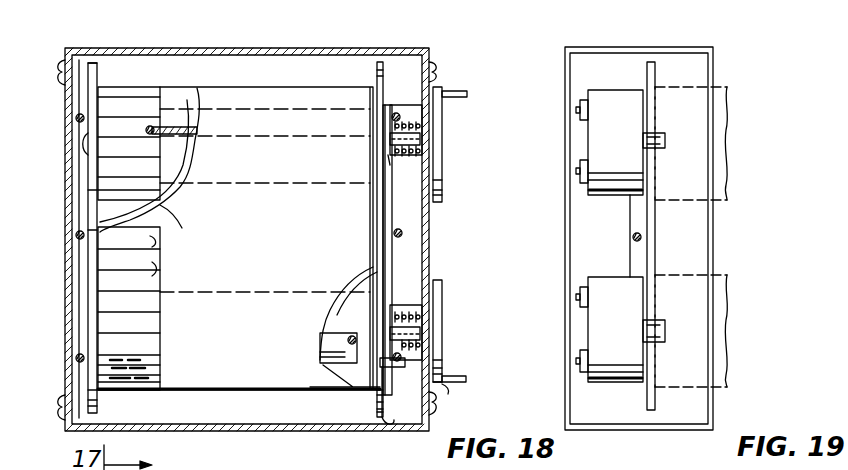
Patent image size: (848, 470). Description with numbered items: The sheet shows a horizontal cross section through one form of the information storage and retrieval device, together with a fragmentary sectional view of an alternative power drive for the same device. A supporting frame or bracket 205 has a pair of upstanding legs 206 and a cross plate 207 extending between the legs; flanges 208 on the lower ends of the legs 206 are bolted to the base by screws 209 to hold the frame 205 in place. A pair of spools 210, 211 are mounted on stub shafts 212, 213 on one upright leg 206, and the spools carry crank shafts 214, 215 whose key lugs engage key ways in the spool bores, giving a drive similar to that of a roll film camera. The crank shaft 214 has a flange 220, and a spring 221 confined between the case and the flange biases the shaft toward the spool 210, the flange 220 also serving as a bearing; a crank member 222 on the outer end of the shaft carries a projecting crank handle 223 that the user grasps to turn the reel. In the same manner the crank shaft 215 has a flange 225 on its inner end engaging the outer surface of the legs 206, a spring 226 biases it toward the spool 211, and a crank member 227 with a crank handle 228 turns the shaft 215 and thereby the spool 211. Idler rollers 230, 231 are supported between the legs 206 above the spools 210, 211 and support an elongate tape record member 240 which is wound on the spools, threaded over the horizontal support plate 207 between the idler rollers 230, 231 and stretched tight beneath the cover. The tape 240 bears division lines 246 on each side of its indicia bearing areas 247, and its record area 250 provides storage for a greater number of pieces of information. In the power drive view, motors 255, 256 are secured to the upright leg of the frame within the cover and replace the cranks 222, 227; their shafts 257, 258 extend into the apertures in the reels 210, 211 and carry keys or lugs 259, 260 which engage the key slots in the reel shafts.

In FIG. 18, the upstanding legs 206 is at (85, 106).
In FIG. 18, the stub shaft 213 is at (82, 143).
In FIG. 18, the screws 209 is at (77, 235).
In FIG. 18, the flanges 208 is at (80, 254).
In FIG. 18, the stub shaft 212 is at (70, 352).
In FIG. 18, the idler roller 231 is at (183, 120).
In FIG. 18, the cross plate 207 is at (170, 212).
In FIG. 18, the division lines 246 is at (153, 240).
In FIG. 18, the indicia bearing areas 247 is at (150, 283).
In FIG. 18, the record area 250 is at (272, 250).
In FIG. 18, the tape record member 240 is at (325, 296).
In FIG. 18, the idler roller 230 is at (357, 380).
In FIG. 18, the spool 210 is at (394, 422).
In FIG. 19, the spool 210 is at (650, 402).
In FIG. 18, the spool 211 is at (380, 72).
In FIG. 19, the spool 211 is at (653, 72).
In FIG. 18, the crank handle 228 is at (455, 91).
In FIG. 18, the spring 226 is at (410, 120).
In FIG. 18, the crank shaft 215 is at (418, 143).
In FIG. 18, the flange 225 is at (390, 160).
In FIG. 18, the crank member 227 is at (440, 189).
In FIG. 18, the supporting frame 205 is at (392, 222).
In FIG. 18, the flange 220 is at (392, 310).
In FIG. 18, the crank shaft 214 is at (415, 330).
In FIG. 18, the spring 221 is at (410, 350).
In FIG. 18, the crank member 222 is at (442, 370).
In FIG. 18, the crank handle 223 is at (452, 380).
In FIG. 19, the motor 256 is at (603, 133).
In FIG. 19, the motor shaft 258 is at (666, 140).
In FIG. 19, the key 260 is at (656, 147).
In FIG. 19, the motor 255 is at (600, 324).
In FIG. 19, the key 259 is at (650, 318).
In FIG. 19, the motor shaft 257 is at (666, 331).